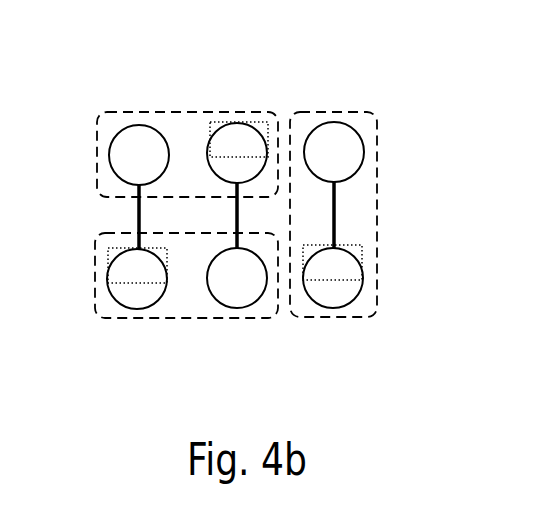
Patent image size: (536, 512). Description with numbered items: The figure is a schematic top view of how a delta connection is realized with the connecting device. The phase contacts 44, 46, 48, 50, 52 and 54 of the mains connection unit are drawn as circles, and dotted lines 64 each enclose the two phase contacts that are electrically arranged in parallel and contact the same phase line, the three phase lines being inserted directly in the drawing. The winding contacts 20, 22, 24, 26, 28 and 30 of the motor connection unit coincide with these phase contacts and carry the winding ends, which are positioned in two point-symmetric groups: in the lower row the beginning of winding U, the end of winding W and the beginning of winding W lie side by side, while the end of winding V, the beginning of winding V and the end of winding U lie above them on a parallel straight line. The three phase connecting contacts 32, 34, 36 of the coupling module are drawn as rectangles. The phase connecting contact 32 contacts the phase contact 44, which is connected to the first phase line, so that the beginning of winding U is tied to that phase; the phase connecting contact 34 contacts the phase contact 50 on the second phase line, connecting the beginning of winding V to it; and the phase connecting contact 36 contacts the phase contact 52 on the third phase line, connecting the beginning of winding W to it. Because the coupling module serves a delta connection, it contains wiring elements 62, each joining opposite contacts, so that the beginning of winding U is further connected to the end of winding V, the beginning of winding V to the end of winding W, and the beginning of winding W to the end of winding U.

The winding contact 20 is at (124, 122).
The phase contact 48 is at (140, 125).
The winding contact 22 is at (240, 113).
The phase contact 50 is at (255, 125).
The winding contact 24 is at (387, 143).
The phase contact 54 is at (360, 140).
The winding contact 26 is at (86, 302).
The phase contact 44 is at (114, 302).
The winding contact 28 is at (220, 310).
The phase contact 46 is at (232, 309).
The winding contact 30 is at (344, 303).
The phase contact 52 is at (334, 308).
The phase connecting contact 32 is at (108, 266).
The phase connecting contact 34 is at (212, 122).
The phase connecting contact 36 is at (362, 253).
The wiring element 62 is at (137, 204).
The dotted line 64 is at (310, 112).